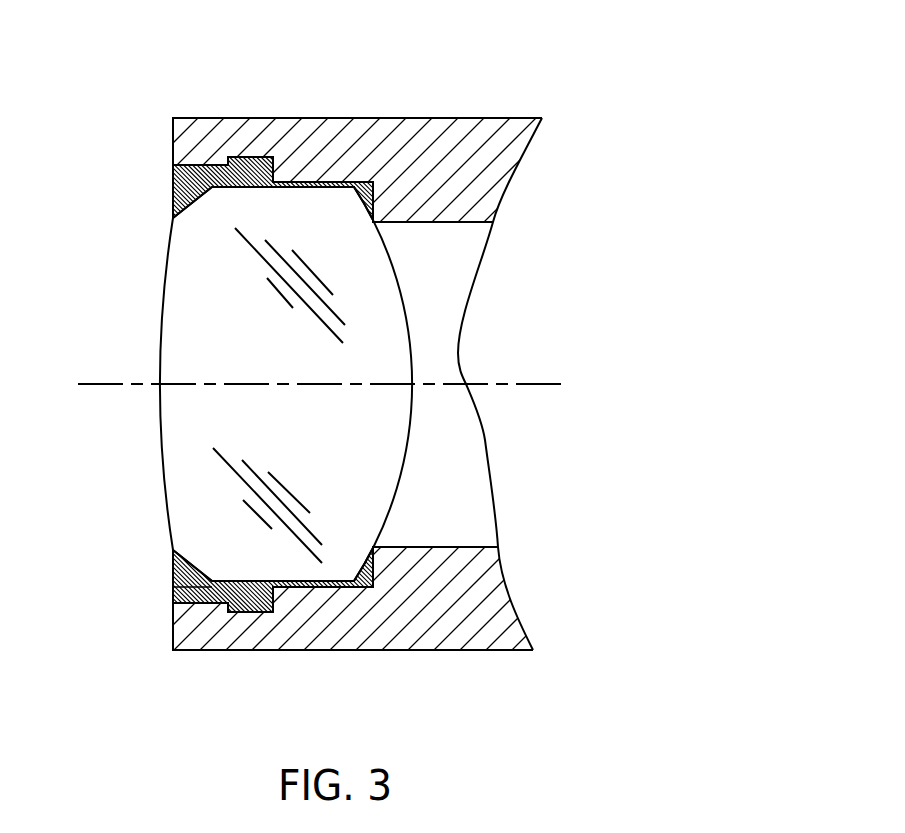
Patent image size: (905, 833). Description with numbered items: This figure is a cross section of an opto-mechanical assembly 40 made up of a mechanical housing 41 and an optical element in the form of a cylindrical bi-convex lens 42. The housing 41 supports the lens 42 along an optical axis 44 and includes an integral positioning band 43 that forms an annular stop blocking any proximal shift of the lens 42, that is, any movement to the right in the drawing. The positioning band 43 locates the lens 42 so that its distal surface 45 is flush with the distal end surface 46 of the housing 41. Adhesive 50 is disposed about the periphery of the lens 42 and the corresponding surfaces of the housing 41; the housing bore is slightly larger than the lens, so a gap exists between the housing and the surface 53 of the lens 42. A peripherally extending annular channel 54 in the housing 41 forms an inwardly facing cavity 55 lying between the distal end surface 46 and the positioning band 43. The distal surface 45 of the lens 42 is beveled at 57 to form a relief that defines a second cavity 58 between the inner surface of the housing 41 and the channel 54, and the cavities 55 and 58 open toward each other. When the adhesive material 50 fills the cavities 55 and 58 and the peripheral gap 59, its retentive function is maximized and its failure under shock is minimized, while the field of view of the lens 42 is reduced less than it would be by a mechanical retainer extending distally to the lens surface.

The opto-mechanical assembly 40 is at (184, 109).
The mechanical housing 41 is at (312, 118).
The bi-convex lens 42 is at (247, 355).
The positioning band 43 is at (460, 210).
The optical axis 44 is at (508, 384).
The distal surface 45 is at (160, 413).
The distal end surface 46 is at (172, 622).
The adhesive 50 is at (172, 193).
The surface of the lens 53 is at (262, 614).
The annular channel 54 is at (243, 157).
The cavity 55 is at (262, 157).
The bevel 57 is at (186, 207).
The second cavity 58 is at (170, 202).
The peripheral gap 59 is at (328, 183).